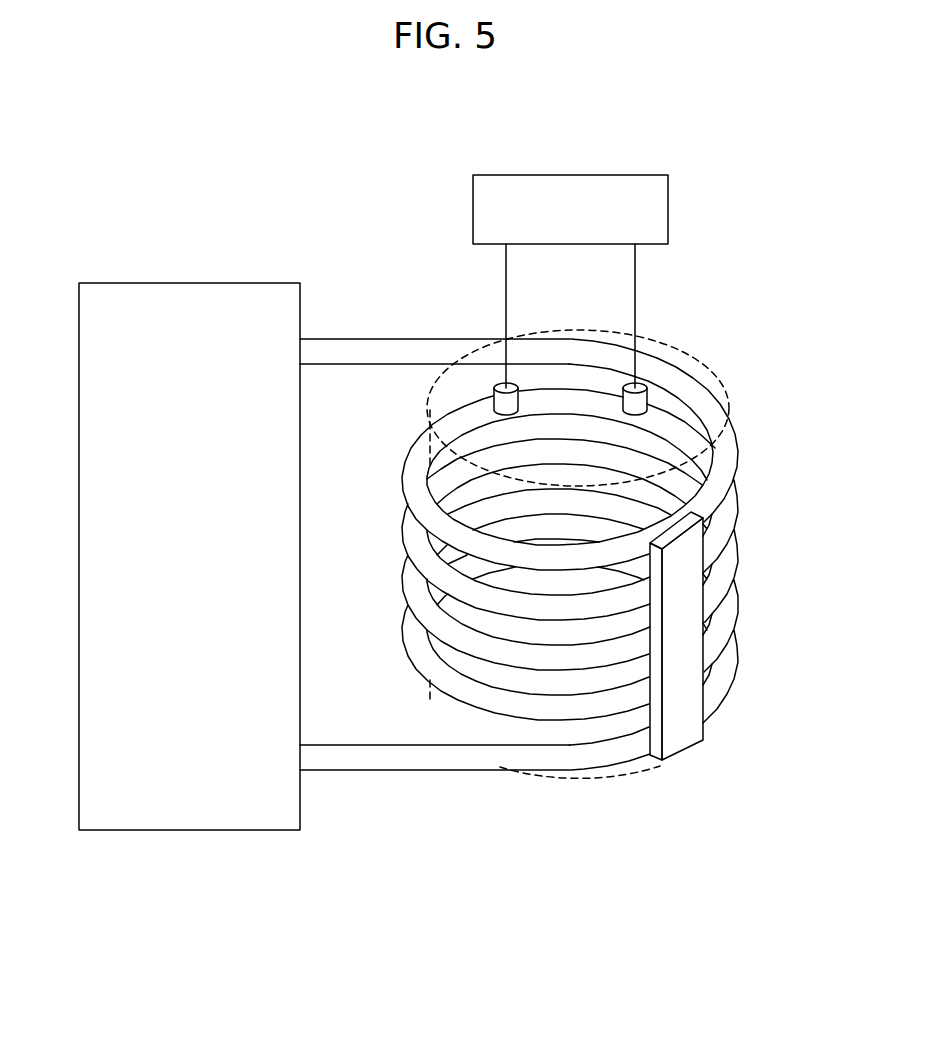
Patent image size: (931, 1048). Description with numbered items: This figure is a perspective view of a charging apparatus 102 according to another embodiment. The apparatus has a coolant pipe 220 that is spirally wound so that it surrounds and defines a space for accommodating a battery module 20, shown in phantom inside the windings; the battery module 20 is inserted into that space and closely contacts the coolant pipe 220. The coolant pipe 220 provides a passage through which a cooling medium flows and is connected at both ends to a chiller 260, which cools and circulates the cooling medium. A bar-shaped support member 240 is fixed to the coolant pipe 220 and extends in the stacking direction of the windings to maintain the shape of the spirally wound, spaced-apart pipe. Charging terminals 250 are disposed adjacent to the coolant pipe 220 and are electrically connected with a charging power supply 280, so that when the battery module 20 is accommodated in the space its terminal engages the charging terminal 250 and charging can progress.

The charging apparatus 102 is at (428, 122).
The battery module 20 is at (672, 366).
The coolant pipe 220 is at (727, 508).
The support member 240 is at (677, 728).
The charging terminal 250 is at (641, 409).
The chiller 260 is at (190, 830).
The charging power supply 280 is at (668, 210).